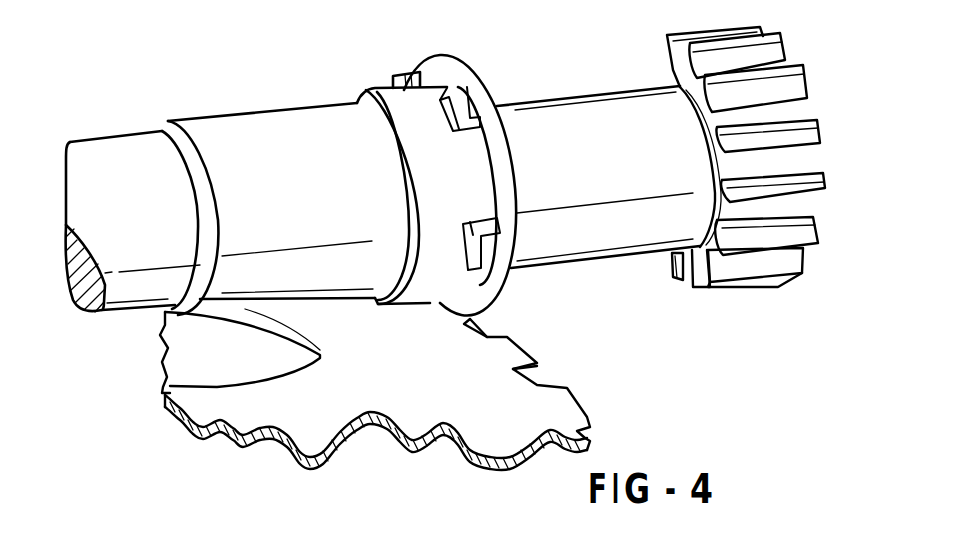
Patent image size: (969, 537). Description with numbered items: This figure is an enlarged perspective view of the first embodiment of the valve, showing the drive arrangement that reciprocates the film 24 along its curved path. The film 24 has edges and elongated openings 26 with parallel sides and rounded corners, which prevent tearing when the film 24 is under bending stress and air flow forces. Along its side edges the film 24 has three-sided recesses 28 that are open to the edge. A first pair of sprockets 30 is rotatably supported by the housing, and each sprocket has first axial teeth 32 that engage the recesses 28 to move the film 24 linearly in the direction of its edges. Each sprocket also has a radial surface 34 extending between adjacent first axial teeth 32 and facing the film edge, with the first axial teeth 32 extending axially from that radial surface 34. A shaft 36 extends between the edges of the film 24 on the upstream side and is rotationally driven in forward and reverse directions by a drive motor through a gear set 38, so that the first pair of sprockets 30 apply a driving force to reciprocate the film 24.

The film 24 is at (462, 407).
The opening 26 is at (297, 368).
The recess 28 is at (481, 330).
The first pair of sprockets 30 is at (410, 132).
The first axial teeth 32 is at (463, 95).
The radial surface 34 is at (519, 155).
The shaft 36 is at (134, 150).
The gear set 38 is at (808, 157).